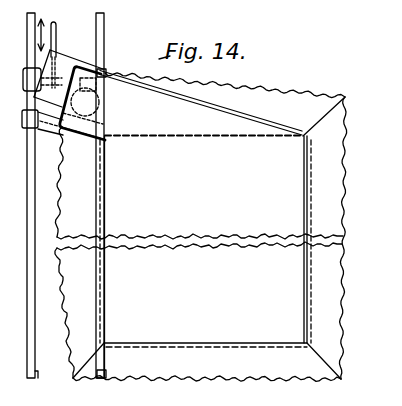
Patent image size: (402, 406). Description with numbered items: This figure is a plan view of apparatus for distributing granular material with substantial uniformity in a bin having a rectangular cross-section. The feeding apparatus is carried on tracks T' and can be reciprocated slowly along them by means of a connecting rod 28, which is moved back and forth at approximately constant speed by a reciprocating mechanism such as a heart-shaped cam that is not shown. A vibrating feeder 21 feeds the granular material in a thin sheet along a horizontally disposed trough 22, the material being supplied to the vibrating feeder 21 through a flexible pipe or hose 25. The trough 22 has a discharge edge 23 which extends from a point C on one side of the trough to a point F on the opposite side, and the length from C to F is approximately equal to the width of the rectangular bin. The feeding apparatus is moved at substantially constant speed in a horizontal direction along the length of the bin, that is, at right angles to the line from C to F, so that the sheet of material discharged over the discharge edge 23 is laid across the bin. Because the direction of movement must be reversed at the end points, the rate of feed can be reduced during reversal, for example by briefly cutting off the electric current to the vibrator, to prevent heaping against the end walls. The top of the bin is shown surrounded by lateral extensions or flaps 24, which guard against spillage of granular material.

The connecting rod 28 is at (56, 31).
The vibrating feeder 21 is at (58, 60).
The flexible pipe or hose 25 is at (104, 72).
The trough 22 is at (247, 124).
The discharge edge 23 is at (213, 139).
The lateral extensions or flaps 24 is at (68, 306).
The point on one side of the trough C is at (107, 138).
The point on the opposite side of the trough F is at (323, 220).
The tracks T' is at (66, 207).